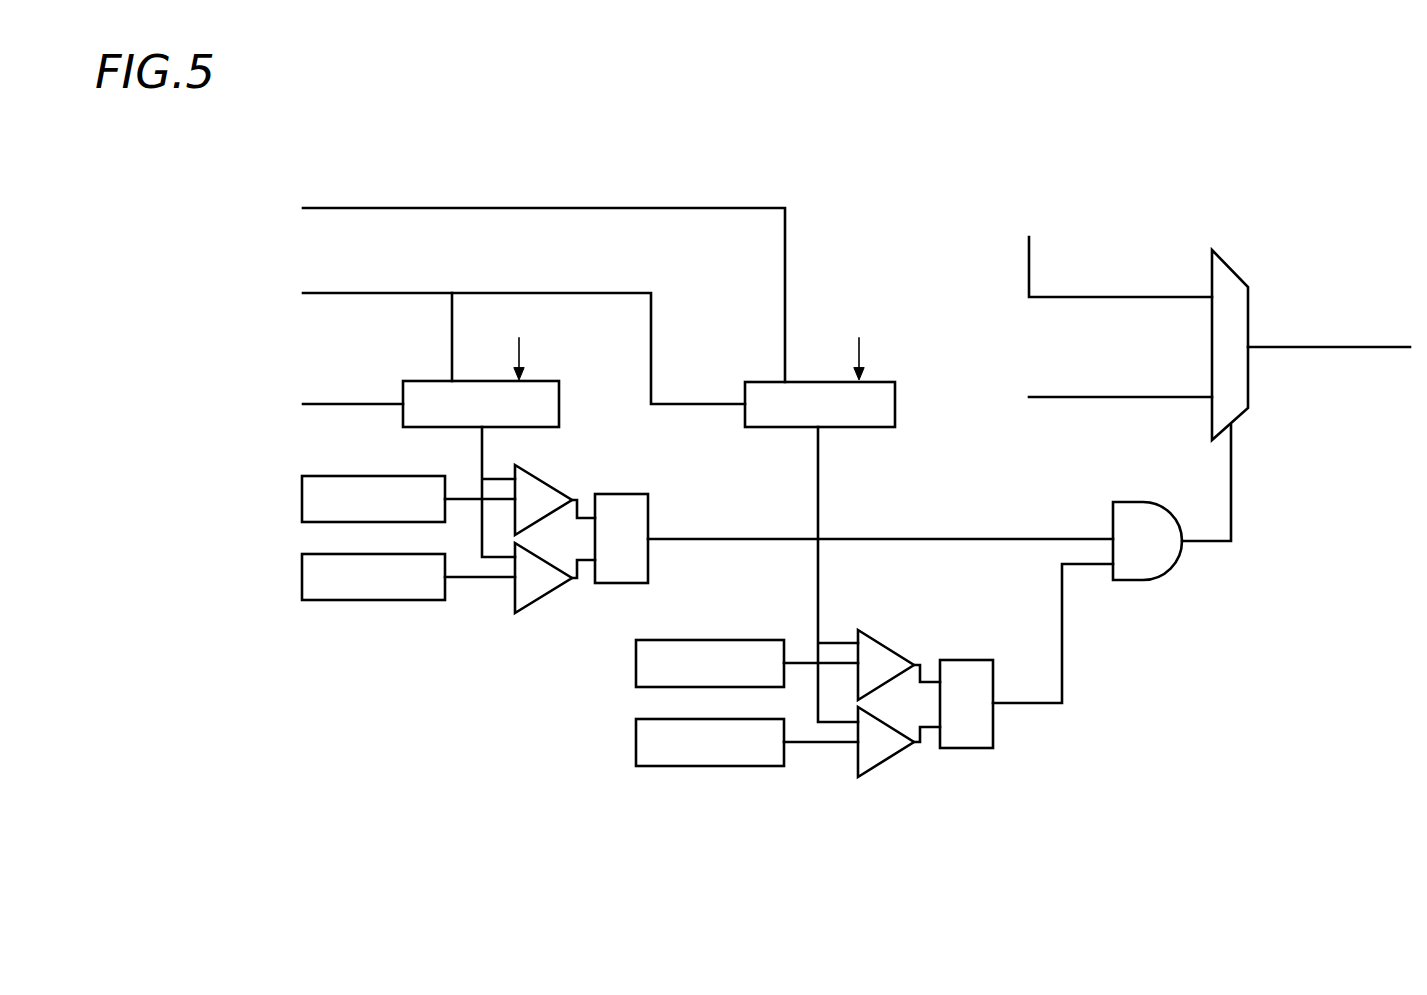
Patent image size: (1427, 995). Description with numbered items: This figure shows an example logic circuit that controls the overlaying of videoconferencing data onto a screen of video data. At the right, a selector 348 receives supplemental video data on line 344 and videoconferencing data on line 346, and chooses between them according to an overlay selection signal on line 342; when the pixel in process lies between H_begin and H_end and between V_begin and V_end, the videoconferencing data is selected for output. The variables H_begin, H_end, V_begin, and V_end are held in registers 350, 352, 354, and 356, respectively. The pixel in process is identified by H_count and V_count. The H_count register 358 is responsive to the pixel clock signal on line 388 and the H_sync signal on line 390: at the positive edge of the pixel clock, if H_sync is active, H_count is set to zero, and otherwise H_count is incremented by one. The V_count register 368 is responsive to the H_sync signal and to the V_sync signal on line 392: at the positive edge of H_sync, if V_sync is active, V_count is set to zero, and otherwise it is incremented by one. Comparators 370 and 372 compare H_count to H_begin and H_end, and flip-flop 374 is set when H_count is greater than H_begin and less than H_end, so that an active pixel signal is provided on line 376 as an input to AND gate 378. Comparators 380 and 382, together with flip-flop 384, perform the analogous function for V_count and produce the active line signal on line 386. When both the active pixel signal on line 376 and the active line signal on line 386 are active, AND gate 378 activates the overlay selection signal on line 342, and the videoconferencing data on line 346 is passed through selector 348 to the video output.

The overlay selection signal line 342 is at (1231, 508).
The supplemental video data line 344 is at (1029, 248).
The videoconferencing data line 346 is at (1097, 400).
The selector 348 is at (1216, 258).
The H_begin register 350 is at (302, 504).
The H_end register 352 is at (302, 583).
The V_begin register 354 is at (650, 689).
The V_end register 356 is at (662, 768).
The H_count register 358 is at (597, 392).
The V_count register 368 is at (863, 428).
The comparator 370 is at (537, 478).
The comparator 372 is at (537, 600).
The flip-flop 374 is at (648, 498).
The active pixel signal line 376 is at (975, 542).
The AND gate 378 is at (1150, 502).
The comparator 380 is at (880, 638).
The comparator 382 is at (875, 770).
The flip-flop 384 is at (993, 728).
The active line signal line 386 is at (1062, 618).
The pixel clock signal line 388 is at (368, 402).
The H_sync signal line 390 is at (390, 292).
The V_sync signal line 392 is at (728, 207).